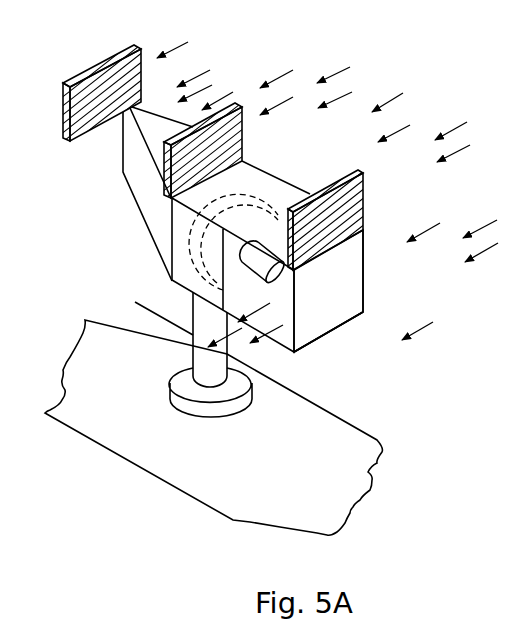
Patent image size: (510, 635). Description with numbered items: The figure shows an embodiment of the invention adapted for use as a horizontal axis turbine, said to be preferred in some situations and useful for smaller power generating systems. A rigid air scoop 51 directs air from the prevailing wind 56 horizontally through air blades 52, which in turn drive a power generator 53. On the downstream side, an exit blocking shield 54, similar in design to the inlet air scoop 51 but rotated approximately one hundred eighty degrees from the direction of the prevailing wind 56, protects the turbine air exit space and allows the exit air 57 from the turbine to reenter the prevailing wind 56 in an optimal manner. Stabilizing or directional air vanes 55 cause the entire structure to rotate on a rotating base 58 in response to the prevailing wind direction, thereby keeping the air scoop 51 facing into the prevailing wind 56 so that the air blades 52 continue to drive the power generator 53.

The rigid air scoop 51 is at (136, 211).
The air blades 52 is at (188, 246).
The power generator 53 is at (310, 343).
The exit blocking shield 54 is at (366, 281).
The stabilizing or directional air vanes 55 is at (62, 102).
The prevailing wind 56 is at (327, 191).
The exit air 57 is at (238, 339).
The rotating base 58 is at (190, 372).